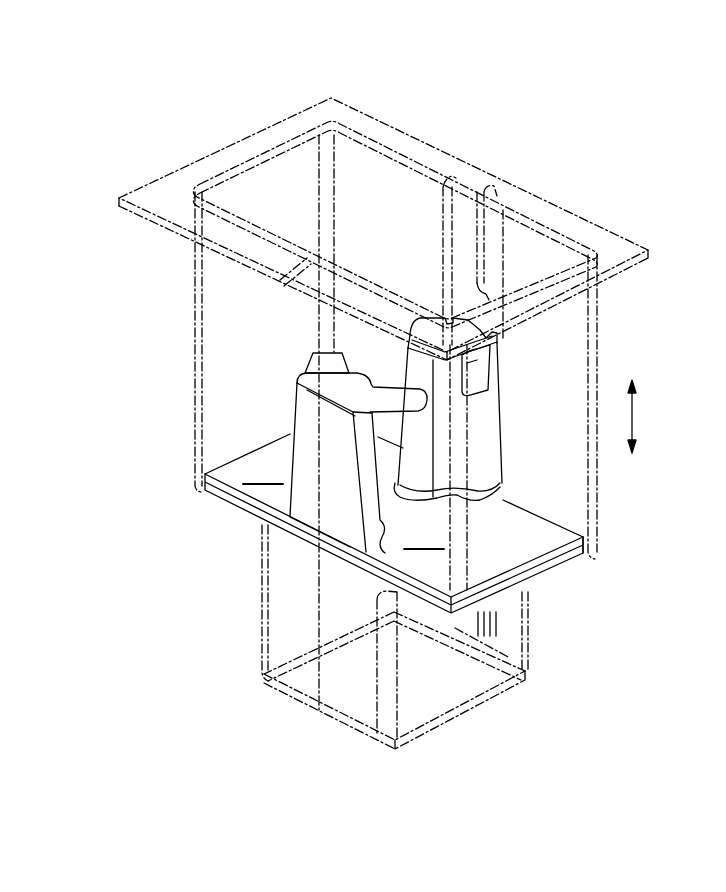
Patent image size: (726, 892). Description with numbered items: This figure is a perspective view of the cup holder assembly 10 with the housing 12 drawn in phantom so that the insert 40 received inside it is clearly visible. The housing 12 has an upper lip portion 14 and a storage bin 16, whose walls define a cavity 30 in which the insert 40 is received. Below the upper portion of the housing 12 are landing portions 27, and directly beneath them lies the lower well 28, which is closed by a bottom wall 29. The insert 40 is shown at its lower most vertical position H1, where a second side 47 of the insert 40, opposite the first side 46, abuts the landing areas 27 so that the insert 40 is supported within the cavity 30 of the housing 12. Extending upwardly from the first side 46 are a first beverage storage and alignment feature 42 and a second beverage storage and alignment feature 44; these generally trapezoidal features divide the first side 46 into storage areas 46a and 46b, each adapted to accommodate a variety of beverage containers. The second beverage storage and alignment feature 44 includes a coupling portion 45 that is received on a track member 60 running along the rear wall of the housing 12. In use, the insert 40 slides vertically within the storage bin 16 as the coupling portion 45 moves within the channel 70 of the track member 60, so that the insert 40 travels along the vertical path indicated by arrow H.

The cup holder assembly 10 is at (485, 120).
The housing 12 is at (599, 188).
The upper lip portion 14 is at (627, 253).
The storage bin 16 is at (606, 363).
The landing portions 27 is at (230, 513).
The lower well 28 is at (532, 660).
The bottom wall 29 is at (442, 718).
The cavity 30 is at (357, 160).
The insert 40 is at (553, 532).
The first beverage storage and alignment feature 42 is at (307, 452).
The second beverage storage and alignment feature 44 is at (477, 427).
The coupling portion 45 is at (468, 317).
The first side 46 is at (518, 553).
The storage area 46a is at (263, 469).
The storage area 46b is at (424, 534).
The second side 47 is at (347, 563).
The track member 60 is at (481, 183).
The channel 70 is at (463, 193).
The path of vertical movement H is at (633, 415).
The lower most vertical position H1 is at (582, 548).